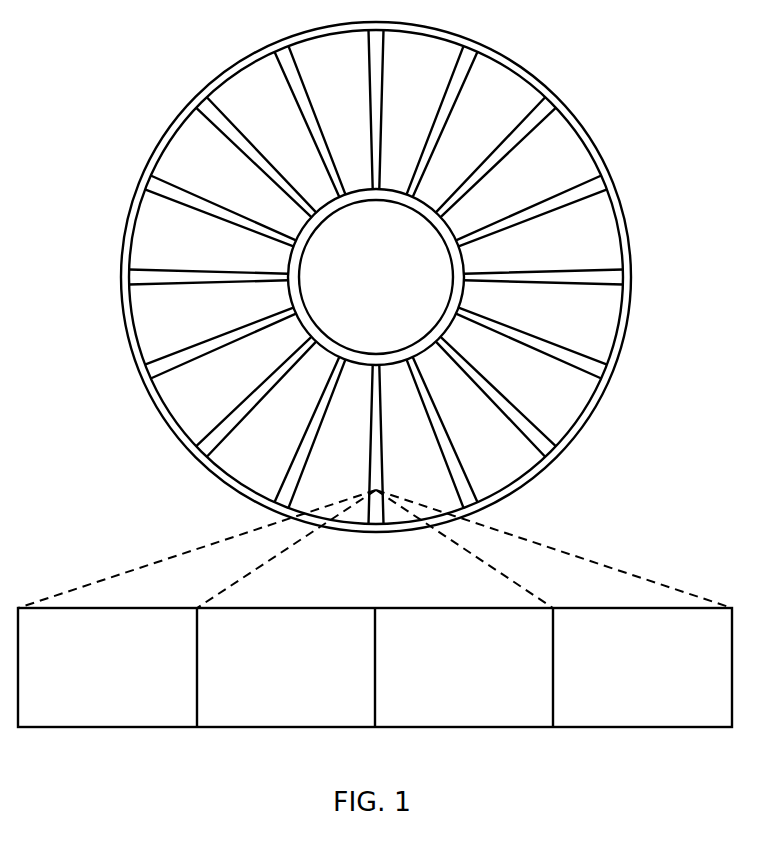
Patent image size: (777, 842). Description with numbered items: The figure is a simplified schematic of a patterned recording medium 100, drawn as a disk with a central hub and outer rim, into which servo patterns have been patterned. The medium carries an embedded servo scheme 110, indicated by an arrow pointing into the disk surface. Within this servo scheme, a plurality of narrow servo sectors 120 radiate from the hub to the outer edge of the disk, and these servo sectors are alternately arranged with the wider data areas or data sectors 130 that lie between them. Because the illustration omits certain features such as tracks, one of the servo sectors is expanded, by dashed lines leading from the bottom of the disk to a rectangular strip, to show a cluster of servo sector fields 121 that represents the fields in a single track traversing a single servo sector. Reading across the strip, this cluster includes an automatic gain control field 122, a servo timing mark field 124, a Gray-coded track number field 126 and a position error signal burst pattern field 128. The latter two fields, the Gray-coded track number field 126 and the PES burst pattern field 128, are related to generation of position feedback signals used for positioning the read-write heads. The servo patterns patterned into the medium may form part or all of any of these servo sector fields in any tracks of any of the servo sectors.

The patterned recording medium 100 is at (89, 116).
The embedded servo scheme 110 is at (191, 234).
The servo sectors 120 is at (215, 438).
The data sectors 130 is at (578, 320).
The cluster of servo sector fields 121 is at (166, 581).
The automatic gain control field 122 is at (72, 654).
The servo timing mark field 124 is at (250, 654).
The Gray-coded track number field 126 is at (455, 654).
The position error signal burst pattern field 128 is at (637, 654).